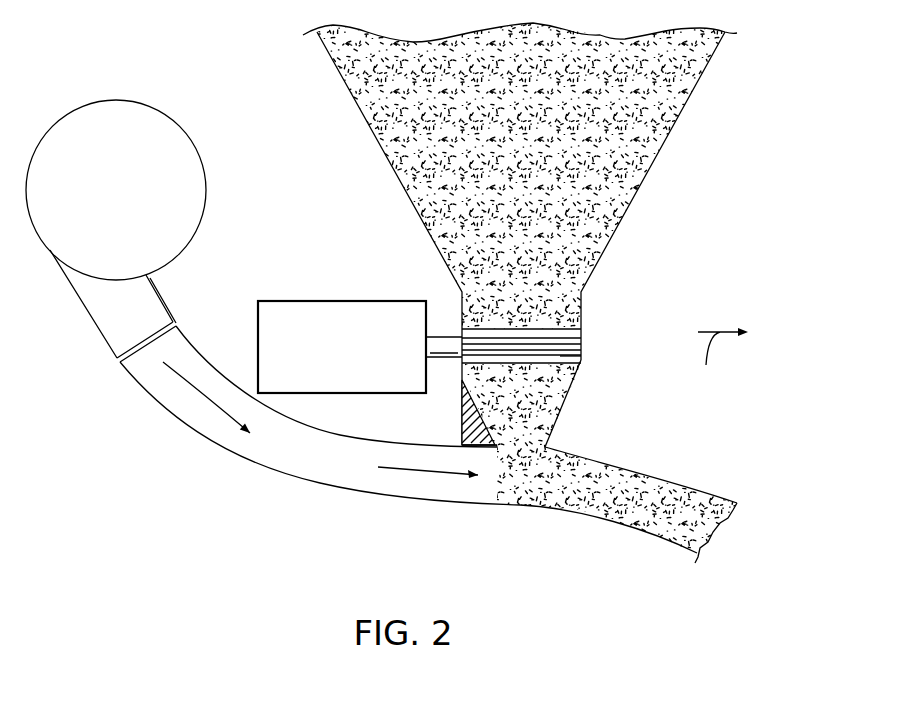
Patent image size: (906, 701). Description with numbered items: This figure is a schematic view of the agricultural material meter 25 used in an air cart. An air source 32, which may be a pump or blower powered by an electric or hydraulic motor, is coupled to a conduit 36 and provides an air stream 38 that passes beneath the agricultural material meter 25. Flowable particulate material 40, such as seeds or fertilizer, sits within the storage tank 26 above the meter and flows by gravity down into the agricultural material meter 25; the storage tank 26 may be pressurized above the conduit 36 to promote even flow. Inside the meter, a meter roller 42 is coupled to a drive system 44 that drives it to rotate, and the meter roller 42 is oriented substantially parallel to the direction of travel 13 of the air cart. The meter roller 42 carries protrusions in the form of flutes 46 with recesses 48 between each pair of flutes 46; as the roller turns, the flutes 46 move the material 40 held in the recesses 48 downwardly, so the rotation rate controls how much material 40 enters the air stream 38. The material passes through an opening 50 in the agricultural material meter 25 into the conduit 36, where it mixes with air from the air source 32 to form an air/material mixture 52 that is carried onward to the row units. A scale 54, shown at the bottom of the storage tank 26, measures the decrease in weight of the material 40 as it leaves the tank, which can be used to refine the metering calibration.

The direction of travel 13 is at (720, 361).
The agricultural material meter 25 is at (594, 317).
The storage tank 26 is at (338, 70).
The air source 32 is at (116, 100).
The conduit 36 is at (277, 477).
The air stream 38 is at (197, 402).
The flowable particulate material 40 is at (673, 83).
The meter roller 42 is at (552, 372).
The drive system 44 is at (340, 301).
The flutes 46 is at (553, 346).
The recesses 48 is at (573, 355).
The opening 50 is at (527, 450).
The air/material mixture 52 is at (637, 513).
The scale 54 is at (462, 419).